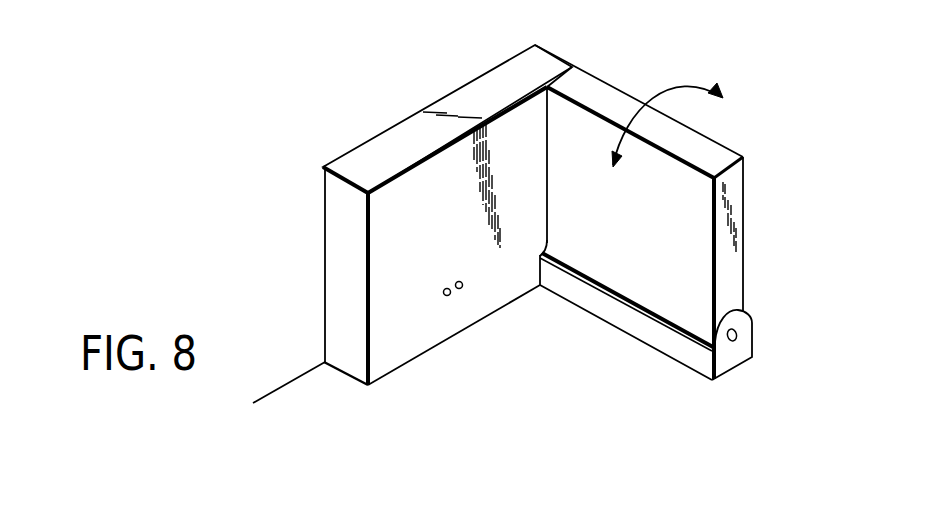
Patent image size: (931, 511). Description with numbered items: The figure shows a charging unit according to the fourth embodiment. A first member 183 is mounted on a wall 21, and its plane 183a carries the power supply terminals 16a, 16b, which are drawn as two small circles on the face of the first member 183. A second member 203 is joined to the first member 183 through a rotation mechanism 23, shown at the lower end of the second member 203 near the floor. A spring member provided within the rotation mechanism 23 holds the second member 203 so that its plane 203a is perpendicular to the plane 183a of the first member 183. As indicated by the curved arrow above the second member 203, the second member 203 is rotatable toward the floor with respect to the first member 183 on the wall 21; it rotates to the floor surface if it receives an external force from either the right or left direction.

The wall 21 is at (287, 362).
The first member 183 is at (402, 140).
The plane of the first member 183a is at (393, 335).
The power supply terminal 16a is at (463, 288).
The power supply terminal 16b is at (450, 296).
The second member 203 is at (737, 272).
The plane of the second member 203a is at (670, 305).
The rotation mechanism 23 is at (745, 343).